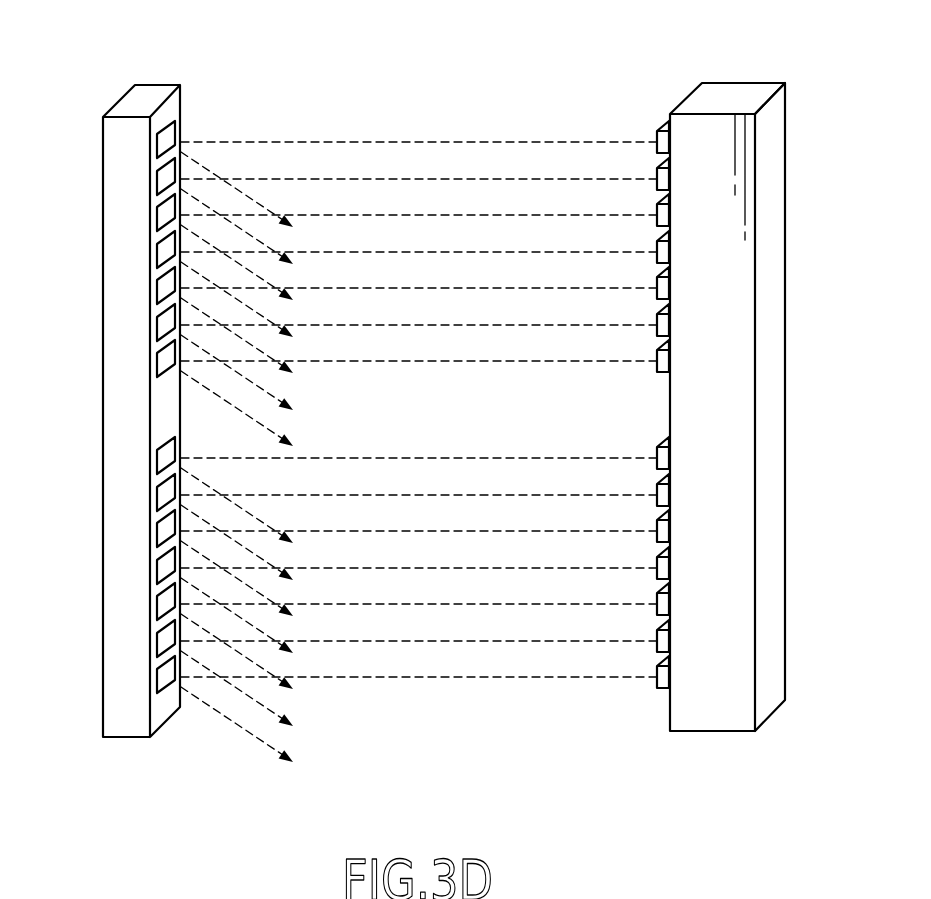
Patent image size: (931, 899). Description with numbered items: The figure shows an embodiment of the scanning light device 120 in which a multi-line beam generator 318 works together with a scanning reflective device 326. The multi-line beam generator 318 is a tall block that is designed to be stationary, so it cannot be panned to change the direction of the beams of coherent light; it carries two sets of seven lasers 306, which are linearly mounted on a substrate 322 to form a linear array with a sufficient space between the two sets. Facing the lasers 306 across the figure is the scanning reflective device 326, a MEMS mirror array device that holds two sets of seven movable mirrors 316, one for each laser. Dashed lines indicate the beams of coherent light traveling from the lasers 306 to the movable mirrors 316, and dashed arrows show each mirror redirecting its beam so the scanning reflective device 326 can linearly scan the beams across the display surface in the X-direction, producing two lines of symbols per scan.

The scanning light device 120 is at (402, 83).
The lasers 306 is at (657, 133).
The movable mirrors 316 is at (157, 147).
The multi-line beam generator 318 is at (757, 45).
The substrate 322 is at (770, 715).
The scanning reflective device 326 is at (125, 737).